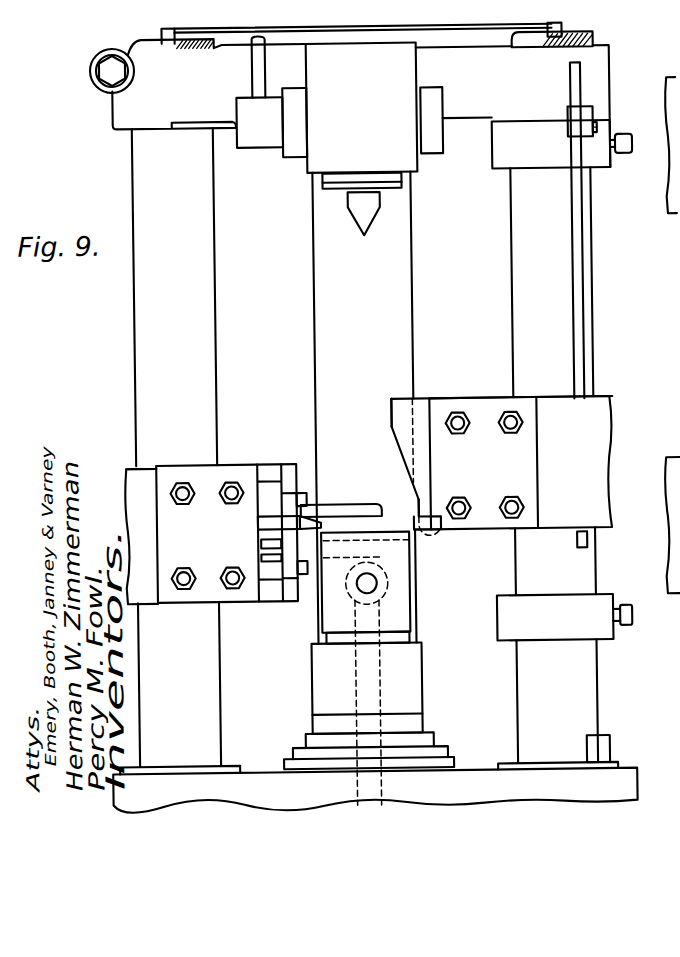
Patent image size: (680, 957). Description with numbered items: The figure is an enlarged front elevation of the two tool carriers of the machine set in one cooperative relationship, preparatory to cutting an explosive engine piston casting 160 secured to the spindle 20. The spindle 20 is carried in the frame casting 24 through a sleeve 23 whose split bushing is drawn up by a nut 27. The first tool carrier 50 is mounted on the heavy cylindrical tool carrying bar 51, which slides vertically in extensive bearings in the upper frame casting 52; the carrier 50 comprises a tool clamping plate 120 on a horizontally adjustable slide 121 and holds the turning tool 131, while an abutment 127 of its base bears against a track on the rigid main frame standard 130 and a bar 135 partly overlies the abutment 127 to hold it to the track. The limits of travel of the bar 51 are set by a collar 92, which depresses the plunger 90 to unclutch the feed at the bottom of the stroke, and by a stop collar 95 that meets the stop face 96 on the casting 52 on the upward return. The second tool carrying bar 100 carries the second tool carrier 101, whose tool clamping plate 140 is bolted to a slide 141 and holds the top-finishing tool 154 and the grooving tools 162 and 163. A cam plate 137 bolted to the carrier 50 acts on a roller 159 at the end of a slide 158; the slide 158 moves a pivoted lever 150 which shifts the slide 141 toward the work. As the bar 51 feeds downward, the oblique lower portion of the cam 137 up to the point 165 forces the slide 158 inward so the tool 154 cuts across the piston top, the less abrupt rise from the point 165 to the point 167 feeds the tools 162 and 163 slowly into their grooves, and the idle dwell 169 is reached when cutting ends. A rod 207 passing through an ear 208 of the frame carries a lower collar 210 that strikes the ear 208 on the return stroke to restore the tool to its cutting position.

The spindle 20 is at (417, 720).
The sleeve 23 is at (457, 762).
The frame casting 24 is at (625, 782).
The nut 27 is at (300, 753).
The tool carrier 50 is at (508, 397).
The tool carrying bar 51 is at (520, 218).
The upper frame casting 52 is at (593, 55).
The plunger 90 is at (600, 747).
The collar 92 is at (602, 598).
The stop collar 95 is at (507, 157).
The stop face 96 is at (557, 118).
The second tool carrying bar 100 is at (202, 233).
The second tool carrier 101 is at (135, 465).
The tool clamping plate 120 is at (522, 452).
The slide 121 is at (595, 430).
The abutment 127 is at (420, 498).
The main frame standard 130 is at (166, 33).
The tool 131 is at (423, 550).
The bar 135 is at (393, 247).
The cam plate 137 is at (405, 400).
The tool clamping plate 140 is at (233, 472).
The slide 141 is at (671, 107).
The lever 150 is at (258, 528).
The tool 154 is at (313, 515).
The slide 158 is at (392, 520).
The roller 159 is at (440, 535).
The piston casting 160 is at (410, 597).
The tool 162 is at (260, 543).
The tool 163 is at (260, 556).
The point 165 is at (400, 452).
The point 167 is at (395, 425).
The idle dwell 169 is at (393, 410).
The rod 207 is at (577, 253).
The ear 208 is at (584, 117).
The collar 210 is at (573, 128).